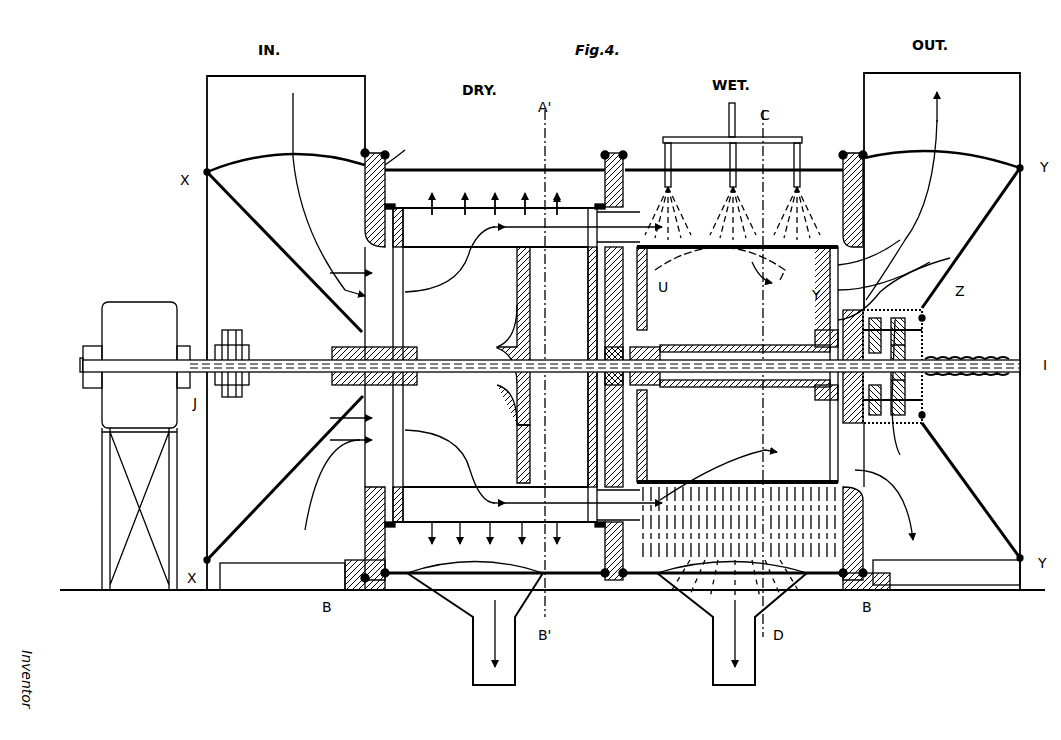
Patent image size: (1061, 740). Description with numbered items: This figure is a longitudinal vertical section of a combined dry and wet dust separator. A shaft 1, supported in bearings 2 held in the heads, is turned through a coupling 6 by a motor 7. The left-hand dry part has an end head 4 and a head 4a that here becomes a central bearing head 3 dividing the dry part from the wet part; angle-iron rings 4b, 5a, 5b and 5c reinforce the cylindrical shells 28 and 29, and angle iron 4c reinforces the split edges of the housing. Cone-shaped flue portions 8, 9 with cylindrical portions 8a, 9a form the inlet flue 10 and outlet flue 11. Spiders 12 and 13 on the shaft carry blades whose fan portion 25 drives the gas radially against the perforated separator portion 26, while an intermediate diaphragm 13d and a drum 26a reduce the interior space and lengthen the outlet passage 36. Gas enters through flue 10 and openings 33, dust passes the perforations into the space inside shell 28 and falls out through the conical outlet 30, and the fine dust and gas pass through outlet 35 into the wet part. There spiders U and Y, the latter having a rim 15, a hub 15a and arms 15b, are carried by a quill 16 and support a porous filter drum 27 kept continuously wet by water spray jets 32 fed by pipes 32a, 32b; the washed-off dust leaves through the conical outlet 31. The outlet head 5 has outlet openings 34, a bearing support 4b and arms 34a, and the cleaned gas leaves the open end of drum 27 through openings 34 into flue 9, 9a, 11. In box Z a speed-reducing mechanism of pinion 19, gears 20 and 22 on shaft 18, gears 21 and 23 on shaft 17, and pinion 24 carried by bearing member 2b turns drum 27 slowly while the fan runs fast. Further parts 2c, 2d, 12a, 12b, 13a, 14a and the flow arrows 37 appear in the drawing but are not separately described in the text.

The shaft 1 is at (280, 360).
The bearing 2 is at (333, 388).
The bearing 2b is at (830, 420).
The sleeve upper 2c is at (675, 388).
The sleeve lower 2d is at (795, 388).
The central bearing head 3 is at (640, 340).
The head 4 is at (366, 200).
The head 4a is at (640, 445).
The bearing support 4b is at (390, 153).
The angle iron 4c is at (885, 280).
The outlet head 5 is at (863, 200).
The angle iron ring 5a is at (603, 153).
The angle iron ring 5b is at (625, 153).
The angle iron ring 5c is at (845, 153).
The coupling 6 is at (233, 337).
The motor 7 is at (140, 302).
The conical portion of inlet flue 8 is at (270, 232).
The cylindrical portion of inlet flue 8a is at (275, 568).
The conical portion of outlet flue 9 is at (968, 230).
The cylindrical portion of outlet flue 9a is at (920, 562).
The inlet flue 10 is at (305, 87).
The outlet flue 11 is at (968, 78).
The spider 12 is at (398, 303).
The drum hub 12a is at (418, 350).
The drum channel 12b is at (403, 227).
The spider 13 is at (532, 303).
The partition disc hub 13a is at (540, 385).
The intermediate diaphragm 13d is at (512, 456).
The wet drum hub 14a is at (660, 350).
The rim 15 is at (830, 258).
The hub 15a is at (818, 335).
The arms 15b is at (894, 277).
The quill 16 is at (710, 355).
The shaft 17 is at (920, 395).
The shaft 18 is at (922, 328).
The pinion 19 is at (922, 350).
The gear 20 is at (898, 318).
The gear 21 is at (900, 415).
The gear 22 is at (875, 318).
The gear 23 is at (875, 415).
The pinion 24 is at (902, 397).
The fan portion of blades 25 is at (485, 247).
The perforated separator portion of blades 26 is at (455, 364).
The drum 26a is at (545, 487).
The porous drum 27 is at (720, 374).
The shell 28 is at (465, 170).
The housing 29 is at (640, 168).
The conical outlet 30 is at (458, 595).
The conical outlet 31 is at (698, 595).
The water spray jets 32 is at (672, 155).
The water feed pipe 32a is at (690, 137).
The water feed pipe 32b is at (737, 112).
The openings 33 is at (332, 311).
The outlet openings 34 is at (869, 251).
The arms 34a is at (862, 487).
The outlet 35 is at (612, 222).
The outlet passage 36 is at (592, 237).
The air flow arrows 37 is at (505, 370).